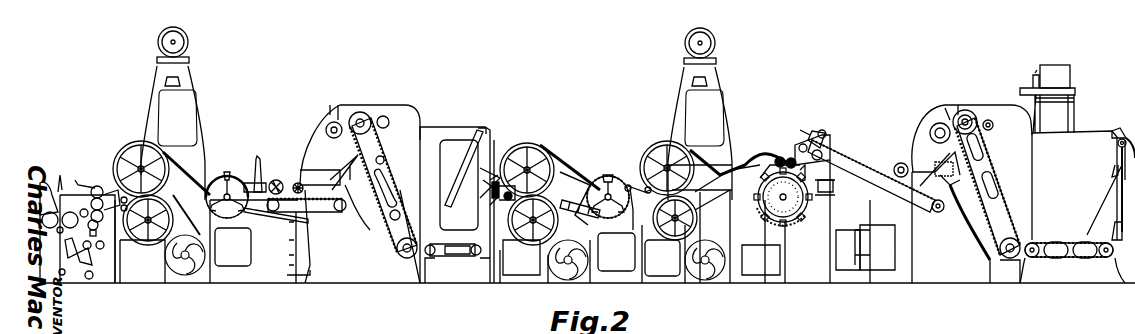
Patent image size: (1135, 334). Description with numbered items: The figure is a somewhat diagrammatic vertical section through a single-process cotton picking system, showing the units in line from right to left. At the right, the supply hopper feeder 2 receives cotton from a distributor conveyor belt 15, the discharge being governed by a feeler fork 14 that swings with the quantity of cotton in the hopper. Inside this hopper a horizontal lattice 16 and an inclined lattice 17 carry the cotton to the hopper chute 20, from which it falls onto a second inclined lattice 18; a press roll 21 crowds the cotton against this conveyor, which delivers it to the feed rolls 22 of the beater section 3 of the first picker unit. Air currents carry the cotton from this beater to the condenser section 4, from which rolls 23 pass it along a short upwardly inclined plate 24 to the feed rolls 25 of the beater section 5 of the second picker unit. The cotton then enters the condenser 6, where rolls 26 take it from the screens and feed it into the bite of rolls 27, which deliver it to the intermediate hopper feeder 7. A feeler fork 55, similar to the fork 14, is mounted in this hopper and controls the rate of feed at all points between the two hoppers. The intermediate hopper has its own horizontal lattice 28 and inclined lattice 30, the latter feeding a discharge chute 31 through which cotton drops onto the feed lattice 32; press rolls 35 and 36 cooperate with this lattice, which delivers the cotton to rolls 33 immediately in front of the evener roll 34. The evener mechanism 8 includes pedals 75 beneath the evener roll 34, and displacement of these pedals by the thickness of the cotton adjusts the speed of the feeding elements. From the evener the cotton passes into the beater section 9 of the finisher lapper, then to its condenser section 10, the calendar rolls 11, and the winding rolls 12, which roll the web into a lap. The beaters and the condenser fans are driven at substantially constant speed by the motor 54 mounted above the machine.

The supply hopper feeder 2 is at (1082, 154).
The beater section 3 is at (804, 215).
The condenser section 4 is at (660, 147).
The beater section 5 is at (606, 178).
The condenser 6 is at (523, 143).
The intermediate hopper feeder 7 is at (455, 135).
The evener mechanism 8 is at (284, 240).
The beater section 9 is at (213, 180).
The condenser section 10 is at (136, 146).
The calendar rolls 11 is at (94, 189).
The winding rolls 12 is at (46, 212).
The feeler fork 14 is at (1098, 210).
The conveyor belt 15 is at (1055, 92).
The horizontal lattice 16 is at (1068, 260).
The inclined lattice 17 is at (985, 205).
The second inclined lattice 18 is at (905, 200).
The hopper chute 20 is at (920, 147).
The press roll 21 is at (900, 164).
The feed rolls 22 is at (790, 160).
The rolls 23 is at (662, 258).
The upwardly inclined plate 24 is at (616, 252).
The feed rolls 25 is at (626, 185).
The rolls 26 is at (500, 178).
The rolls 27 is at (482, 200).
The horizontal lattice 28 is at (444, 256).
The inclined lattice 30 is at (372, 158).
The discharge chute 31 is at (325, 151).
The feed lattice 32 is at (333, 210).
The rolls 33 is at (259, 166).
The evener roll 34 is at (250, 183).
The press roll 35 is at (298, 180).
The press roll 36 is at (282, 179).
The motor 54 is at (714, 43).
The feeler fork 55 is at (466, 190).
The pedals 75 is at (280, 227).